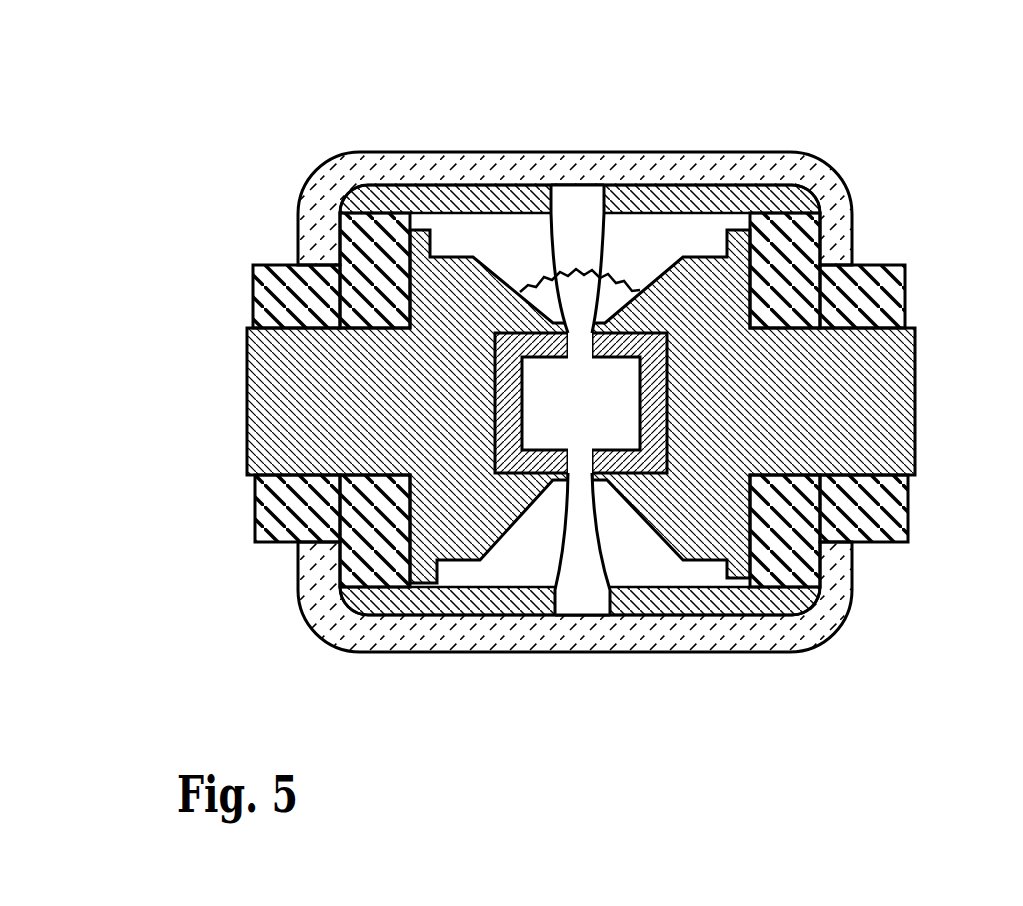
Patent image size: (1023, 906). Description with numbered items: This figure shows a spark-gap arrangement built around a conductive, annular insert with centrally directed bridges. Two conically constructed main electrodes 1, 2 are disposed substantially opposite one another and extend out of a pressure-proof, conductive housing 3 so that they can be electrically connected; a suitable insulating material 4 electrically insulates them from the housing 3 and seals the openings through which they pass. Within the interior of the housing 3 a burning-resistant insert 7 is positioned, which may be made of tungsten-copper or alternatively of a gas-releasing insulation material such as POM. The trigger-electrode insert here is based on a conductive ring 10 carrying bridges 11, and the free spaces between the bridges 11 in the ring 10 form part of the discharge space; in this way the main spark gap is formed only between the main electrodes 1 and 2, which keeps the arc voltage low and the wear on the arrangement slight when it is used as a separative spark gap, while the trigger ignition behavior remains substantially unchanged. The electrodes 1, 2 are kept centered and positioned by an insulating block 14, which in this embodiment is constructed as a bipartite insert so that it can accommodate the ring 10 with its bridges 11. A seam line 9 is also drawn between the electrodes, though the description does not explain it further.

The main electrode 1 is at (278, 362).
The main electrode 2 is at (892, 372).
The pressure-proof conductive housing 3 is at (811, 178).
The insulating material 4 is at (863, 277).
The burning-resistant insert 7 is at (482, 202).
The separation seam 9 is at (504, 280).
The conductive ring 10 is at (573, 195).
The bridges 11 is at (590, 510).
The insulating block 14 is at (521, 455).